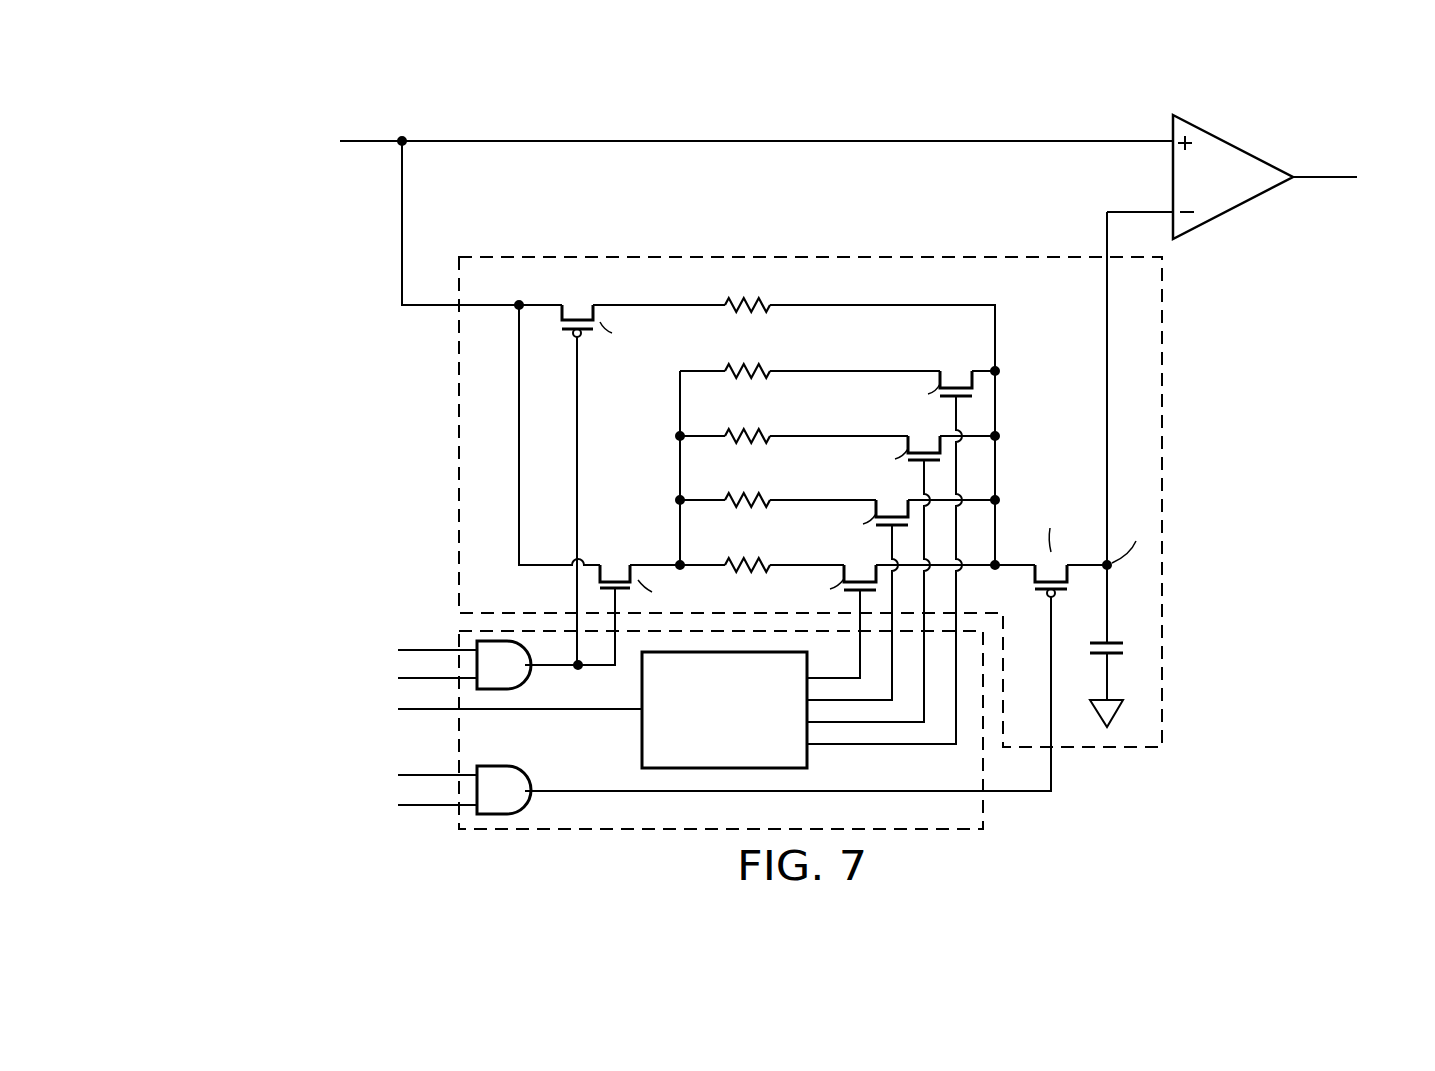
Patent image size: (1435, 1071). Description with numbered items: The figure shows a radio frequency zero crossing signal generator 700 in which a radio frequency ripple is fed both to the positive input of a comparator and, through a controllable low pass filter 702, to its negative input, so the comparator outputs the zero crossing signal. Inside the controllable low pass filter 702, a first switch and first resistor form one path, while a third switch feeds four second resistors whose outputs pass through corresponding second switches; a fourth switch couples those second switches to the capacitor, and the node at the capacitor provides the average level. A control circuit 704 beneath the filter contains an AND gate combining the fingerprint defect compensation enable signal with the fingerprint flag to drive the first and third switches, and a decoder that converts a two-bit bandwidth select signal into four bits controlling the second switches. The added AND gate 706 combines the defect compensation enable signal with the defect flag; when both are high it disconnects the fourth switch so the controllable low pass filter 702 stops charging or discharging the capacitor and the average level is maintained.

The radio frequency zero crossing signal generator 700 is at (247, 109).
The controllable low pass filter 702 is at (459, 436).
The control logic block 704 is at (459, 746).
The AND gate 706 is at (526, 776).